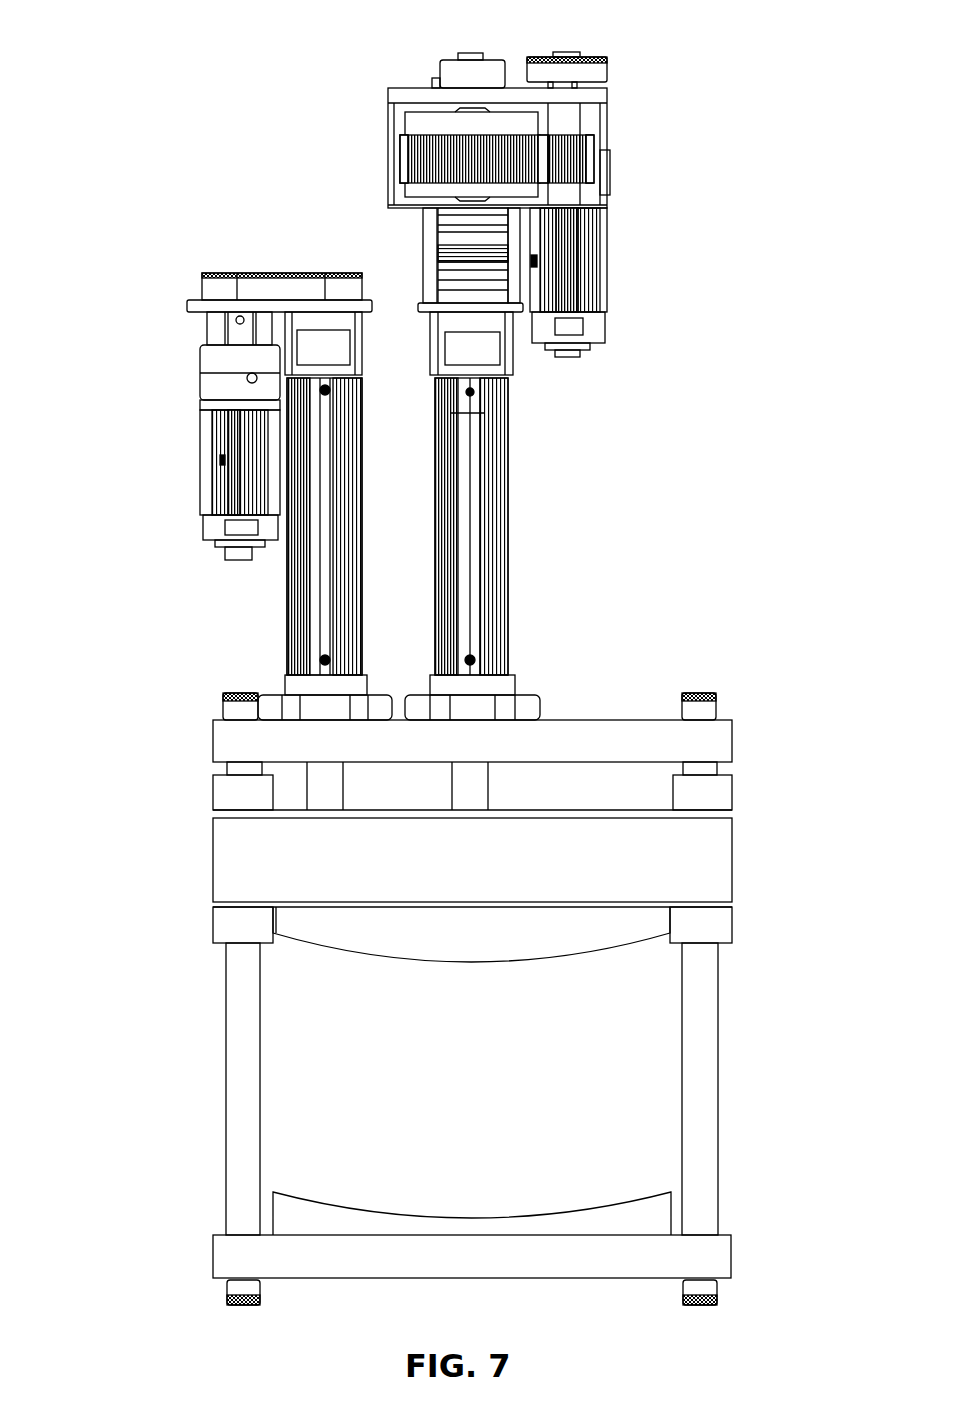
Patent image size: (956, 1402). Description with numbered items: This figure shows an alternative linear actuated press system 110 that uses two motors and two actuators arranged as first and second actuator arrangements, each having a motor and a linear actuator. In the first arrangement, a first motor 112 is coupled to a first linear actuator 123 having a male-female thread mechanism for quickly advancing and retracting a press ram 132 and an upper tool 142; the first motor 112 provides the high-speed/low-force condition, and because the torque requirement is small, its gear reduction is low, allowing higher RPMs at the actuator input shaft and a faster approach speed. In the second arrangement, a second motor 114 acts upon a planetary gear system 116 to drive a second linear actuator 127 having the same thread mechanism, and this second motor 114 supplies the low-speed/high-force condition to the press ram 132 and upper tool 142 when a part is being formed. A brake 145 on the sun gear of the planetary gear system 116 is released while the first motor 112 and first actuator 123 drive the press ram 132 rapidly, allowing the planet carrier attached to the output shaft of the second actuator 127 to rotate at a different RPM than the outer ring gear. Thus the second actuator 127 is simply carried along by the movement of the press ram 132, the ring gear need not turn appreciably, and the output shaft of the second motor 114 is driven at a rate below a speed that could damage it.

The linear actuated press system 110 is at (145, 130).
The brake 145 is at (476, 56).
The planetary gear system 116 is at (607, 140).
The second motor 114 is at (607, 282).
The second linear actuator 127 is at (477, 517).
The first motor 112 is at (225, 478).
The first linear actuator 123 is at (292, 628).
The press ram 132 is at (720, 853).
The upper tool 142 is at (618, 933).